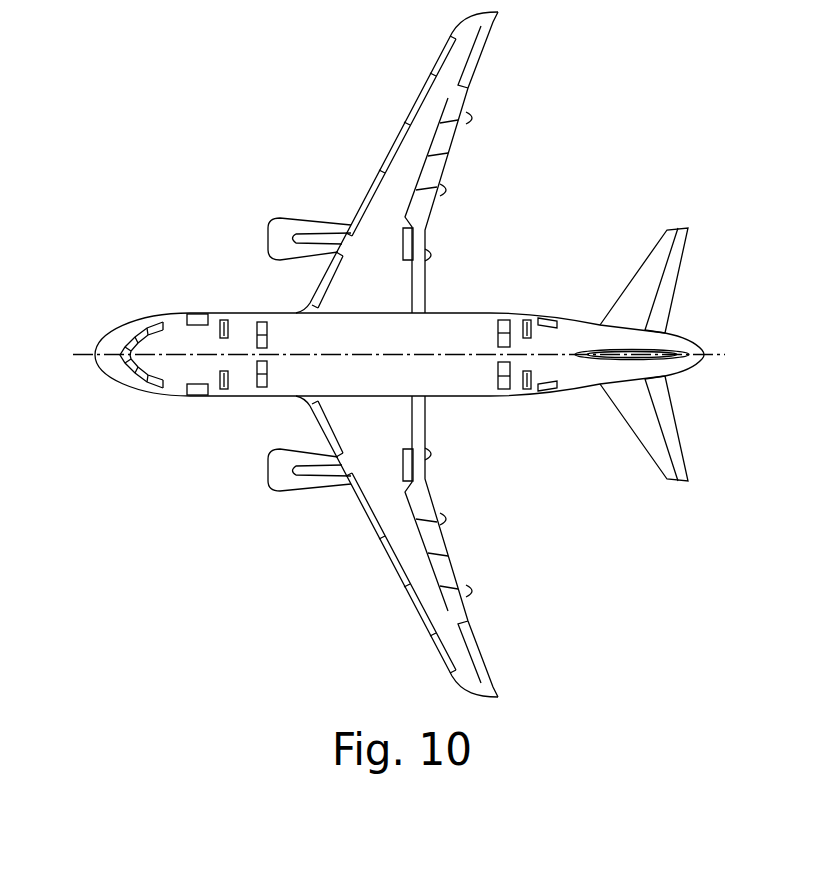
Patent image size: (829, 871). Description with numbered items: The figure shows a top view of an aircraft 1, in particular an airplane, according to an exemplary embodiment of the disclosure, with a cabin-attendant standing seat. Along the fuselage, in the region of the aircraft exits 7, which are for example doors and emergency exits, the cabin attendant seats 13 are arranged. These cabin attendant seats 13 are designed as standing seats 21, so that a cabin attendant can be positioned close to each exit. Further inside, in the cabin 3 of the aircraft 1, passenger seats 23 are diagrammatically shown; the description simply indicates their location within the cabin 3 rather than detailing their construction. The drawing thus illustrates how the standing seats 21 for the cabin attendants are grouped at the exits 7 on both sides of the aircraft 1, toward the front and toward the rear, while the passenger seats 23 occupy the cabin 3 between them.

The aircraft 1 is at (100, 262).
The cabin 3 is at (299, 372).
The aircraft exits 7 is at (187, 316).
The cabin attendant seats 13 is at (224, 320).
The standing seats 21 is at (221, 318).
The passenger seats 23 is at (266, 320).